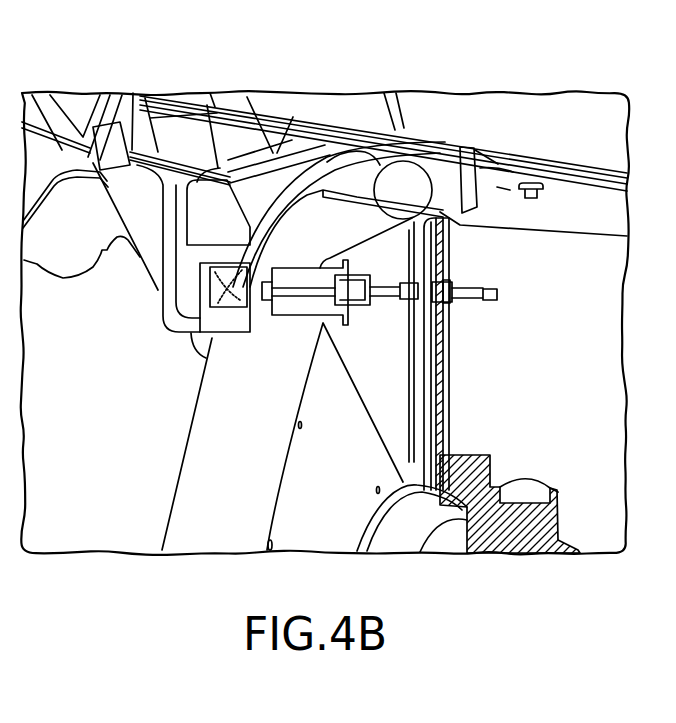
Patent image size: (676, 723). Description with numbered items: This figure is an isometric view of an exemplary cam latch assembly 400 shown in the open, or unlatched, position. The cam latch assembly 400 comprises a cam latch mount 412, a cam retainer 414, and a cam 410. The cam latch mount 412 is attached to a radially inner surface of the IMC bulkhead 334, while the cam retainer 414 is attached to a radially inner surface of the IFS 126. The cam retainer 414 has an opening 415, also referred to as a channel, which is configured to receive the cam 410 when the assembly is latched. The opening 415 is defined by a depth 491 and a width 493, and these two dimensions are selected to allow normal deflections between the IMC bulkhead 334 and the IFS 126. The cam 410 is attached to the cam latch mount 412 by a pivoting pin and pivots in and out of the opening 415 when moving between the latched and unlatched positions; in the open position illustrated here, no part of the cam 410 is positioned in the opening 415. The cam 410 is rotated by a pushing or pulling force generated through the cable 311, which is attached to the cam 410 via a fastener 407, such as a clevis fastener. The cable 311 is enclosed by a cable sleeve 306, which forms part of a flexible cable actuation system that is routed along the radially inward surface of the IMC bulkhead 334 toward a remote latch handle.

The cam latch assembly 400 is at (420, 78).
The IFS 126 is at (187, 166).
The cam retainer 414 is at (152, 279).
The opening 415 is at (203, 300).
The depth 491 is at (248, 342).
The width 493 is at (258, 272).
The cam 410 is at (280, 316).
The fastener 407 is at (347, 276).
The IMC bulkhead 334 is at (445, 412).
The cable sleeve 306 is at (483, 285).
The cable 311 is at (495, 303).
The cam latch mount 412 is at (377, 403).